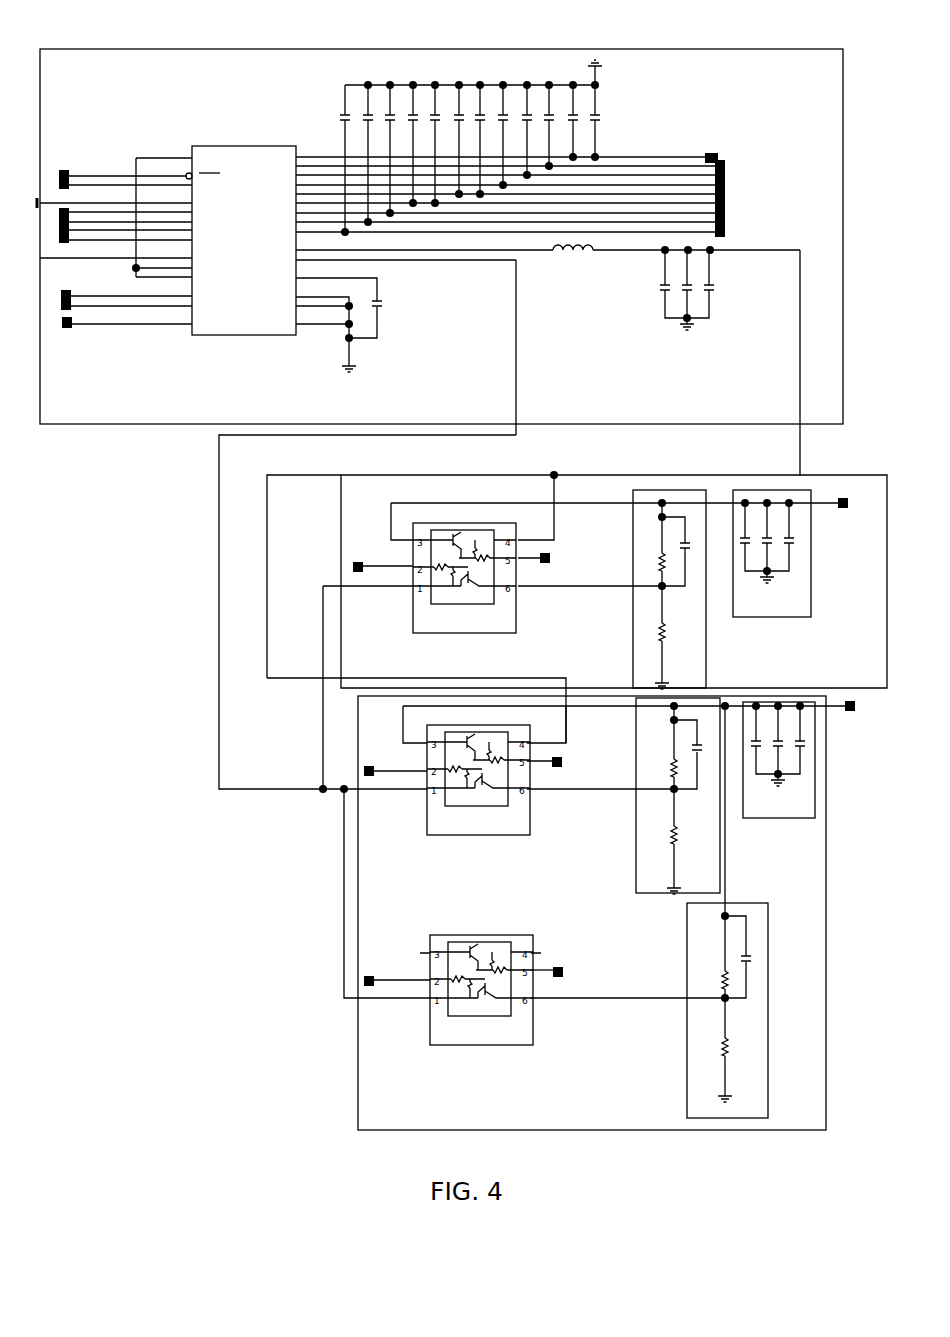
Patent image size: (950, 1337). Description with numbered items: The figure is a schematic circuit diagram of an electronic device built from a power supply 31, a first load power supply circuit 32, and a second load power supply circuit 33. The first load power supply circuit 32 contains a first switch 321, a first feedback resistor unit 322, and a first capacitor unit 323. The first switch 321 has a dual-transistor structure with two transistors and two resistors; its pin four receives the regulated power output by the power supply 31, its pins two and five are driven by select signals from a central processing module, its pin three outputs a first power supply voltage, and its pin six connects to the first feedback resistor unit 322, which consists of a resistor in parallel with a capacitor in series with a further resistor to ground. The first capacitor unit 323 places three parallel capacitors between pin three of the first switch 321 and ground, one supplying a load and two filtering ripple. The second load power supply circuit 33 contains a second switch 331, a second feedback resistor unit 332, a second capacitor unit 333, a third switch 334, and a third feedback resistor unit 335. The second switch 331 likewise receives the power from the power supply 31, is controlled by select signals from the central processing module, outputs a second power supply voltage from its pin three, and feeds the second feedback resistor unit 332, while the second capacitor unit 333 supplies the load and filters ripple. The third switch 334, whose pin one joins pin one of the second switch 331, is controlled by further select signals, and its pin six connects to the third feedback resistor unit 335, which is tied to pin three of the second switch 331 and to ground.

The power supply 31 is at (641, 49).
The first load power supply circuit 32 is at (817, 474).
The first switch 321 is at (441, 523).
The first feedback resistor unit 322 is at (650, 491).
The first capacitor unit 323 is at (746, 494).
The second load power supply circuit 33 is at (827, 805).
The second switch 331 is at (440, 728).
The second feedback resistor unit 332 is at (636, 750).
The second capacitor unit 333 is at (815, 752).
The third switch 334 is at (443, 935).
The third feedback resistor unit 335 is at (745, 905).